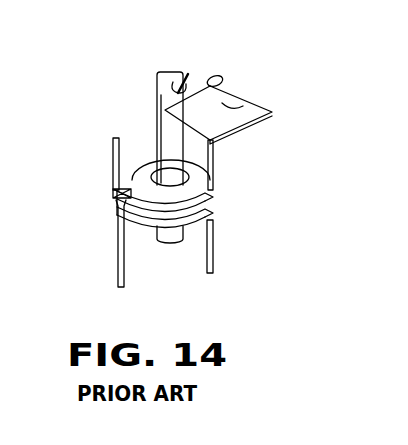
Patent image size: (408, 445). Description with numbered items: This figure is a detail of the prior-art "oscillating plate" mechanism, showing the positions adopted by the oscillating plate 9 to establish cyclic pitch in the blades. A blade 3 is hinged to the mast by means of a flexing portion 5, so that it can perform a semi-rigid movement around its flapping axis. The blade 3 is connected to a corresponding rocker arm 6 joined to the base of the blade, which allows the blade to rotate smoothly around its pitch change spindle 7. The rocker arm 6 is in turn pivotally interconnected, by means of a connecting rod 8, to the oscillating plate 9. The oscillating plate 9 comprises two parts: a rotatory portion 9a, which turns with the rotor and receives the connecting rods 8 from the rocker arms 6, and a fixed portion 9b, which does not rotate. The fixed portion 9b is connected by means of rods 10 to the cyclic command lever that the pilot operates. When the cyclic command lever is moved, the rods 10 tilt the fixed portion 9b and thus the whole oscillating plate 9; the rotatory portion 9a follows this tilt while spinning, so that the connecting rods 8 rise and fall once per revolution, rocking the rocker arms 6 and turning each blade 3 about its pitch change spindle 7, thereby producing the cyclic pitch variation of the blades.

The blade 3 is at (250, 104).
The flexing portion 5 is at (190, 80).
The rocker arm 6 is at (217, 77).
The pitch change spindle 7 is at (185, 73).
The connecting rod 8 is at (213, 170).
The oscillating plate 9 is at (120, 205).
The rotatory portion 9a is at (170, 233).
The fixed portion 9b is at (201, 228).
The rod 10 is at (117, 255).